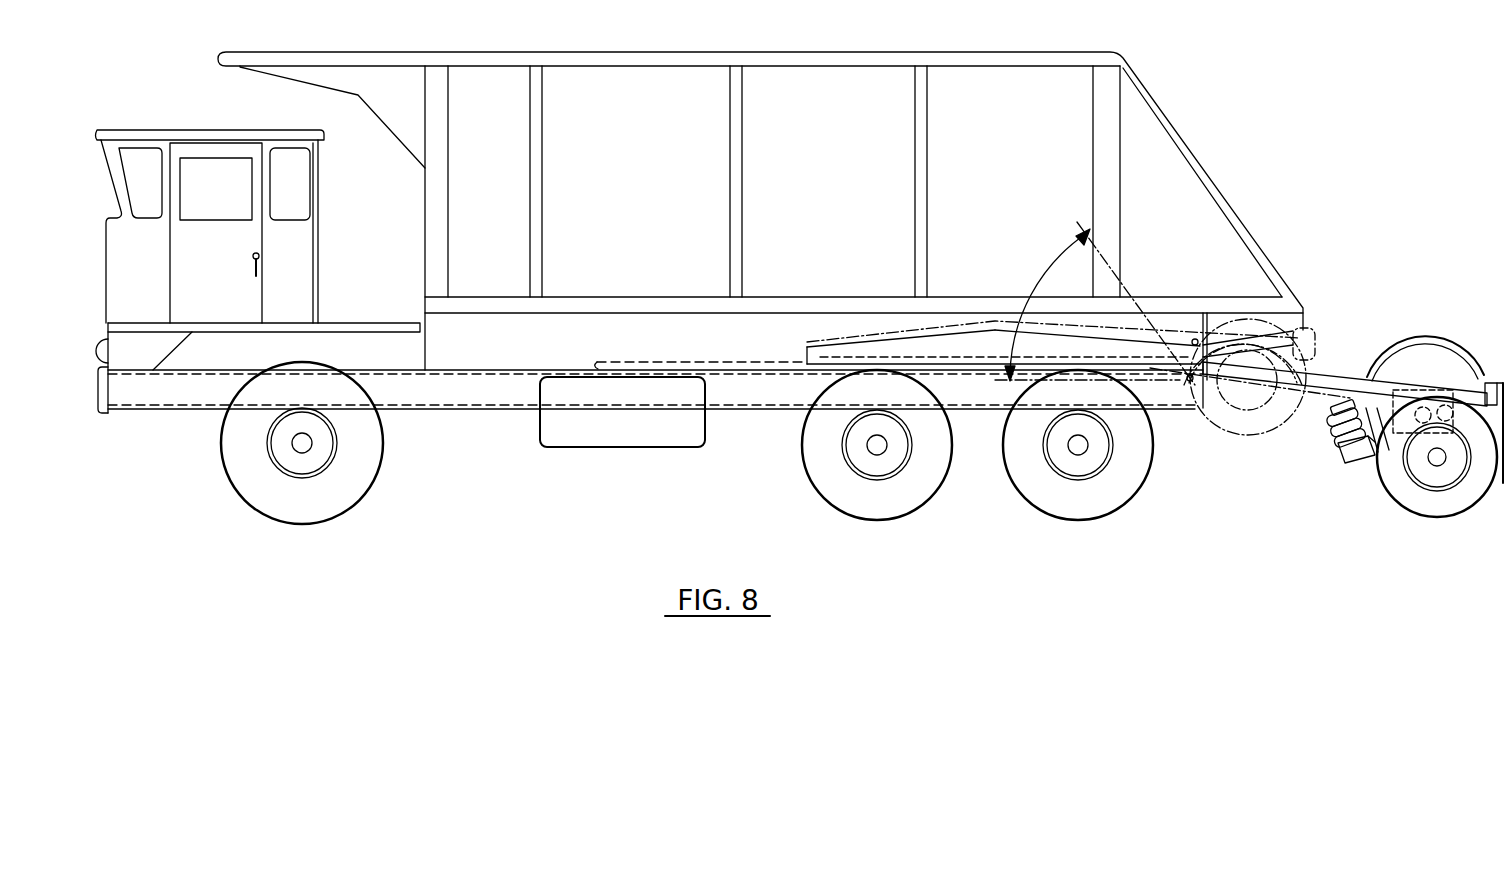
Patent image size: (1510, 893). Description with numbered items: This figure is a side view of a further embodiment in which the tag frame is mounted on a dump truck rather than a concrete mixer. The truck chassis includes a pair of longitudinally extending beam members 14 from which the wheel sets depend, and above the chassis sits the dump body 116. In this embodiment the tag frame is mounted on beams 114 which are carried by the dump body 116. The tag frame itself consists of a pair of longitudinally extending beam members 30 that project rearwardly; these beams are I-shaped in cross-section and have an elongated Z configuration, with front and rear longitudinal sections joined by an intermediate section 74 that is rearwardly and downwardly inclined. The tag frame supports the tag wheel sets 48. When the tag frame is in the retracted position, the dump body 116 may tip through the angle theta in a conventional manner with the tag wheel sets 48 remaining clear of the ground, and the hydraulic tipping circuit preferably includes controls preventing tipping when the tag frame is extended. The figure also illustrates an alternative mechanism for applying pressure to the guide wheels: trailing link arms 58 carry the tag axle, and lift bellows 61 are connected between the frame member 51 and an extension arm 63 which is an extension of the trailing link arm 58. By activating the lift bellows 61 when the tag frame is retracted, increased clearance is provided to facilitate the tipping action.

The dump body 116 is at (708, 78).
The longitudinally extending beam members 14 is at (418, 398).
The beams 114 is at (496, 357).
The longitudinally extending beam members 30 is at (1103, 356).
The intermediate section 74 is at (1267, 378).
The tag wheel sets 48 is at (1430, 390).
The trailing link arms 58 is at (1378, 466).
The frame member 51 is at (1343, 409).
The lift bellows 61 is at (1333, 428).
The extension arm 63 is at (1350, 452).